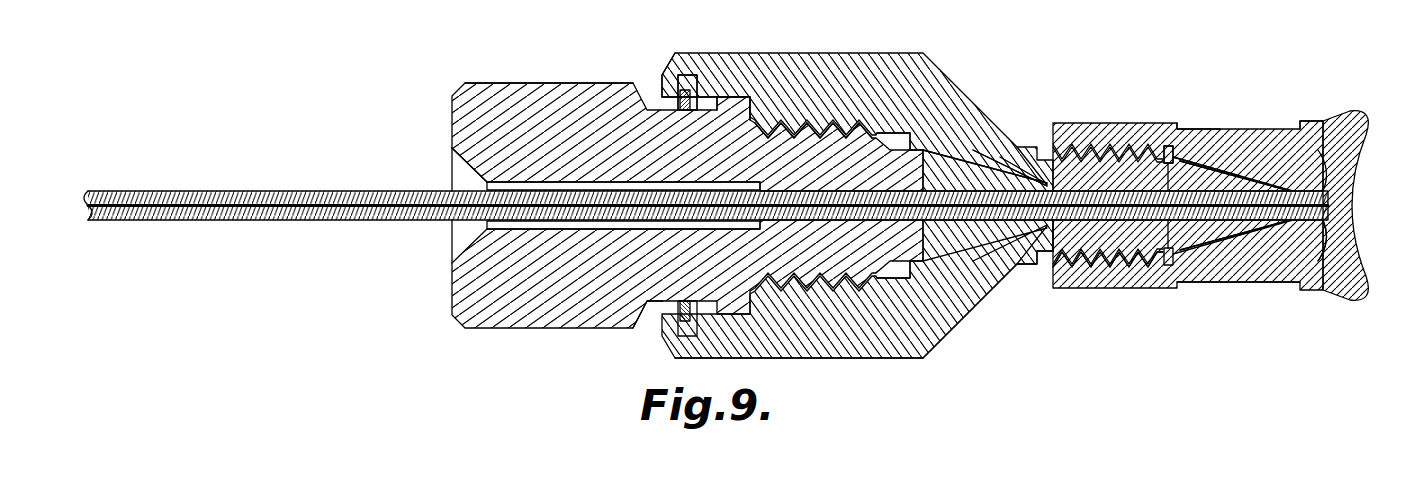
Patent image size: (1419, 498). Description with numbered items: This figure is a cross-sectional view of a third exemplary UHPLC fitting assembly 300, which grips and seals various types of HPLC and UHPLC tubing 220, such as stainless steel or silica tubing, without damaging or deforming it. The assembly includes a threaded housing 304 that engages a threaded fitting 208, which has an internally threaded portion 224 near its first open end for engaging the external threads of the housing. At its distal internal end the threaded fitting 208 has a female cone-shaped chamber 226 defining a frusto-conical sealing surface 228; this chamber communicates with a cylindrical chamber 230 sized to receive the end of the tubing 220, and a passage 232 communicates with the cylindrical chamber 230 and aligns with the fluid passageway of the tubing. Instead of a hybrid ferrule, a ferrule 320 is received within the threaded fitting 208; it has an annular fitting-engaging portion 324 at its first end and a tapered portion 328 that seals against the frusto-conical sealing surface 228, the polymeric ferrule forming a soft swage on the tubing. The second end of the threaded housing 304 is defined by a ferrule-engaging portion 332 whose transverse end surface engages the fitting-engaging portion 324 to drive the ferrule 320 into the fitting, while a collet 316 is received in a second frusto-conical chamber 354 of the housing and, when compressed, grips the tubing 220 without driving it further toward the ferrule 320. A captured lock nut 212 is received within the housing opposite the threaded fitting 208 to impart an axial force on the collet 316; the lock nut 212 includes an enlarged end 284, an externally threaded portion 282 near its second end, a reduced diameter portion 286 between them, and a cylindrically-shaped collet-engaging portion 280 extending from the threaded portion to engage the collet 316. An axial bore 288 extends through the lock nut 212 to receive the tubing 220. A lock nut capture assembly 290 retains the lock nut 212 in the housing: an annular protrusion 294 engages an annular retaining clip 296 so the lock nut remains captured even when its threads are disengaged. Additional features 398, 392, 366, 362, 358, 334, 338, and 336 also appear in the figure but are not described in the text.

The UHPLC fitting assembly 300 is at (418, 60).
The enlarged end 284 is at (556, 82).
The reduced diameter portion 286 is at (656, 108).
The annular retaining clip 296 is at (684, 92).
The set pin 398 is at (689, 96).
The annular protrusion 294 is at (718, 95).
The body step 392 is at (746, 92).
The body threads 366 is at (806, 118).
The threaded housing 304 is at (885, 50).
The externally threaded portion 282 is at (879, 138).
The collet-engaging portion 280 is at (953, 150).
The tapered ferrule 362 is at (990, 158).
The second frusto-conical chamber 354 is at (1030, 150).
The ferrule slit 358 is at (1046, 175).
The internally threaded portion 224 is at (1166, 145).
The fitting-engaging portion 324 is at (1200, 129).
The tapered portion 328 is at (1238, 156).
The ferrule 320 is at (1254, 172).
The threaded fitting 208 is at (1306, 112).
The cylindrical chamber 230 is at (1365, 150).
The axial bore 288 is at (478, 180).
The tubing 220 is at (322, 222).
The lock nut 212 is at (537, 332).
The lock nut capture assembly 290 is at (650, 320).
The nut outer surface 334 is at (828, 360).
The nut inner groove 338 is at (897, 272).
The collet 316 is at (965, 268).
The sleeve end face 336 is at (1045, 264).
The ferrule-engaging portion 332 is at (1160, 264).
The cone-shaped chamber 226 is at (1215, 280).
The frusto-conical sealing surface 228 is at (1245, 245).
The passage 232 is at (1338, 224).